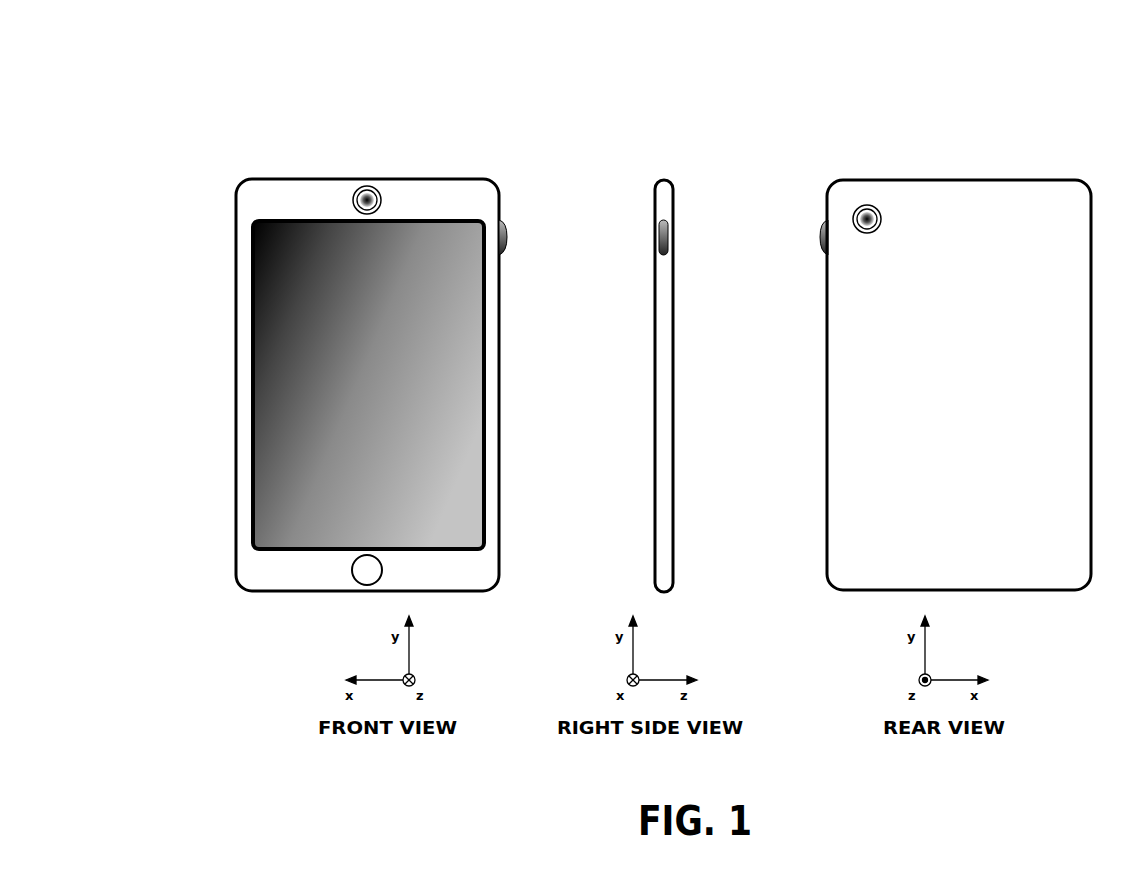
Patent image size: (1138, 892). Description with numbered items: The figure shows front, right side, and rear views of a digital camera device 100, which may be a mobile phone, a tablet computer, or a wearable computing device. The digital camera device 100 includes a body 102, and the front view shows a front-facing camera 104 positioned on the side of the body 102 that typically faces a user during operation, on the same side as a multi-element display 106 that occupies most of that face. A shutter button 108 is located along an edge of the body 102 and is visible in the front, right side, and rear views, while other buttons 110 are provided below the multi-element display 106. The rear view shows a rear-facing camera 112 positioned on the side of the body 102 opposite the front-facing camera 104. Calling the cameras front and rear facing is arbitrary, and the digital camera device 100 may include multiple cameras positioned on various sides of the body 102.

The digital camera device 100 is at (411, 72).
The body 102 is at (340, 178).
The front-facing camera 104 is at (381, 196).
The multi-element display 106 is at (455, 220).
The shutter button 108 is at (506, 228).
The other buttons 110 is at (362, 584).
The rear-facing camera 112 is at (858, 206).